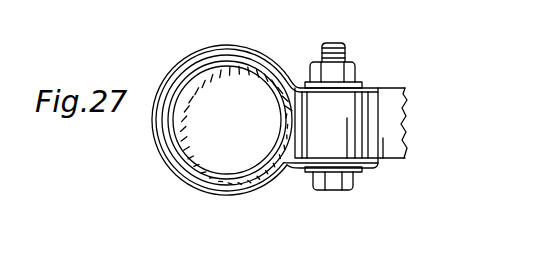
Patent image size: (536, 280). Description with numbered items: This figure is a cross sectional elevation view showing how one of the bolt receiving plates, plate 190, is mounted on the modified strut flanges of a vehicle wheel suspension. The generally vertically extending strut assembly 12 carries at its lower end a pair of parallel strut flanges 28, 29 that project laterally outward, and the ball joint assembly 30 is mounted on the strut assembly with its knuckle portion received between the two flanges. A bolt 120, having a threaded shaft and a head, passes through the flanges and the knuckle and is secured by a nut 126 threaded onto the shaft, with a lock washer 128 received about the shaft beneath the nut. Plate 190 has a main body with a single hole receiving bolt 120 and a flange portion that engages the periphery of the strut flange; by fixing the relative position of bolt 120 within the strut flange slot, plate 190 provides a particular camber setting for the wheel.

The strut assembly 12 is at (237, 112).
The strut flange 28 is at (287, 73).
The lock washer 128 is at (302, 78).
The strut flange 29 is at (293, 170).
The ball joint assembly 30 is at (407, 120).
The bolt 120 is at (336, 56).
The nut 126 is at (356, 73).
The plate 190 is at (378, 177).